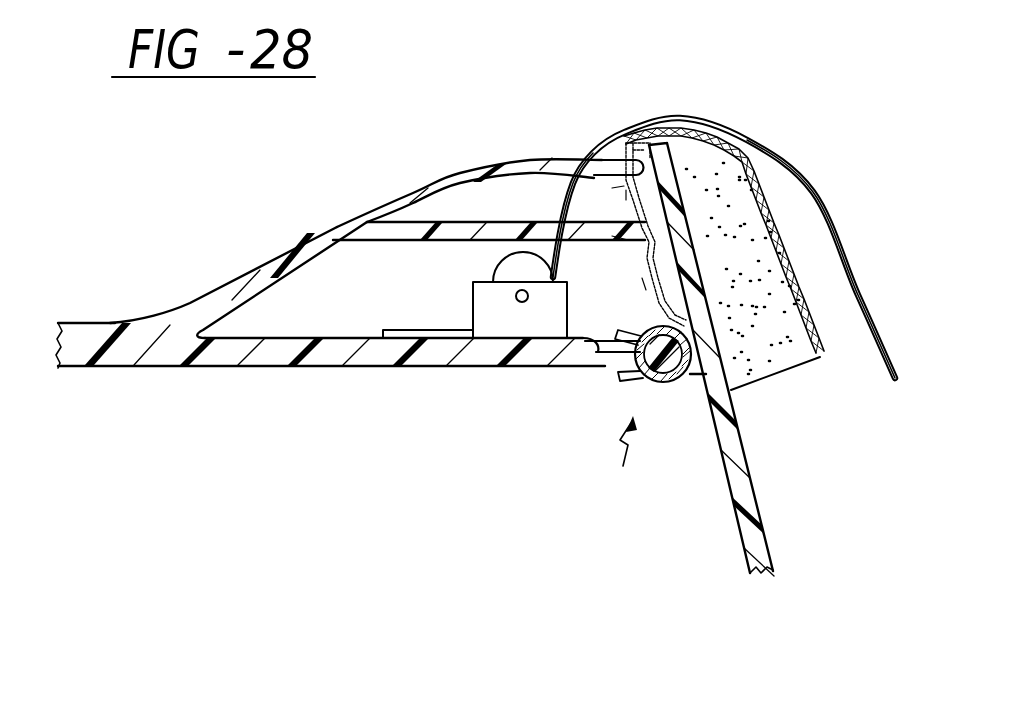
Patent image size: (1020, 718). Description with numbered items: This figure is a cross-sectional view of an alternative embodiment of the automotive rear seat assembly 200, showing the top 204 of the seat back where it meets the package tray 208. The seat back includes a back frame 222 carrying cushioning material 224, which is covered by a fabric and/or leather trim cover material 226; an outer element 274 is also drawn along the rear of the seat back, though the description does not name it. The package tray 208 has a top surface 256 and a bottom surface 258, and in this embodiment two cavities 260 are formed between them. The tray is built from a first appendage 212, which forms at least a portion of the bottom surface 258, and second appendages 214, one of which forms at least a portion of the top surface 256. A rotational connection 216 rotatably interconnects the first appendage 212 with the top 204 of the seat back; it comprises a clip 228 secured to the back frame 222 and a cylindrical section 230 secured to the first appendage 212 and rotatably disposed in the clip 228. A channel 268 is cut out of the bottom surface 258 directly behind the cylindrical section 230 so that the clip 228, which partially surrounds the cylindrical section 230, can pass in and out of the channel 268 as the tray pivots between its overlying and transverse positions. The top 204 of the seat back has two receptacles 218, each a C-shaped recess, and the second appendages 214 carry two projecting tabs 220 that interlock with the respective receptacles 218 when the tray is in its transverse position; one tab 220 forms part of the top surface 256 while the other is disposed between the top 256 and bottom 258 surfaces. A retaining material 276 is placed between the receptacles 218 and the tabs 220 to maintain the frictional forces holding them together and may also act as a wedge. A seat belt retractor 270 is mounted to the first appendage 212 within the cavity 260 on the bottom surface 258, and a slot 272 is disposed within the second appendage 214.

The automotive rear seat assembly 200 is at (416, 490).
The top of the seat back 204 is at (668, 121).
The package tray 208 is at (202, 232).
The first appendage 212 is at (430, 352).
The second appendage 214 is at (460, 176).
The rotational connection 216 is at (618, 462).
The receptacle 218 is at (624, 148).
The projecting tab 220 is at (612, 190).
The back frame 222 is at (766, 543).
The cushioning material 224 is at (762, 368).
The trim cover material 226 is at (829, 336).
The clip 228 is at (670, 385).
The cylindrical section 230 is at (622, 377).
The top surface 256 is at (112, 321).
The bottom surface 258 is at (112, 368).
The cavity 260 is at (290, 252).
The channel 268 is at (588, 360).
The seat belt retractor 270 is at (470, 312).
The slot 272 is at (579, 162).
The outer skin 274 is at (808, 190).
The retaining material 276 is at (626, 196).